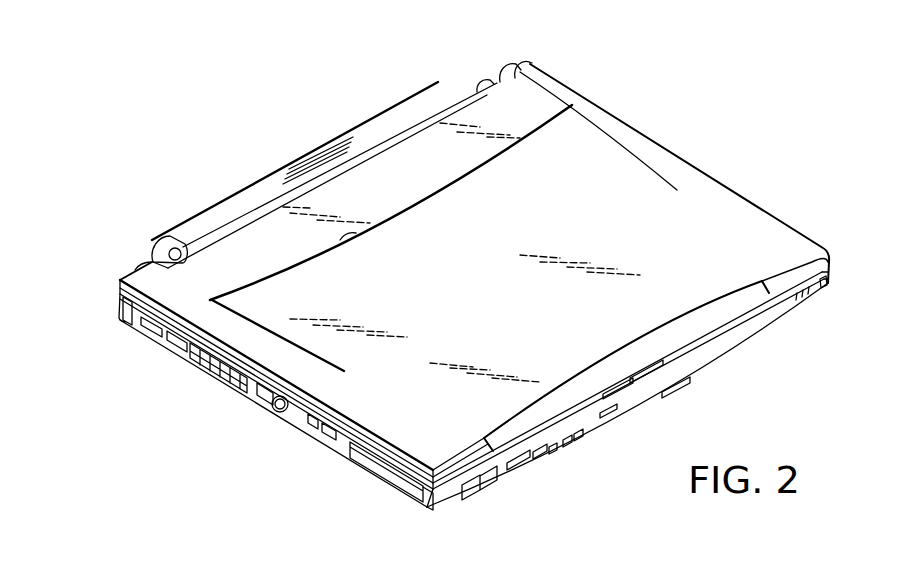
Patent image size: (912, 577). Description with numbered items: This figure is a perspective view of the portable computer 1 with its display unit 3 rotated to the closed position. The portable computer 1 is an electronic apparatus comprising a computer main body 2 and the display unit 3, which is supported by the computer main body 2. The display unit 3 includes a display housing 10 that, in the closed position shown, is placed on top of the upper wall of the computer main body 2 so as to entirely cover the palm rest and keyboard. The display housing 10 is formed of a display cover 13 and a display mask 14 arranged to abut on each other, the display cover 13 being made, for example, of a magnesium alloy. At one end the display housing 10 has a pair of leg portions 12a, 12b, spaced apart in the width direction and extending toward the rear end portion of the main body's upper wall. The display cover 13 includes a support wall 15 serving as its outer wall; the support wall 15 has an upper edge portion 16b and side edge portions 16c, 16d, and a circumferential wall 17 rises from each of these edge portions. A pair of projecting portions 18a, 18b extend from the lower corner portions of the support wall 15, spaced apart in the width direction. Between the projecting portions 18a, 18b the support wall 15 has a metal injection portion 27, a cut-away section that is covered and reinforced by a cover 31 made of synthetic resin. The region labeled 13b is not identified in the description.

The portable computer 1 is at (703, 76).
The computer main body 2 is at (347, 455).
The display unit 3 is at (794, 247).
The display housing 10 is at (173, 407).
The leg portion 12a is at (140, 266).
The leg portion 12b is at (513, 65).
The display cover 13 is at (233, 332).
The raised panel of display housing 13b is at (461, 168).
The display mask 14 is at (125, 322).
The support wall 15 is at (677, 223).
The upper edge portion 16b is at (822, 287).
The side edge portion 16c is at (266, 395).
The side edge portion 16d is at (683, 153).
The circumferential wall 17 is at (478, 458).
The projecting portion 18a is at (137, 268).
The projecting portion 18b is at (533, 65).
The metal injection portion 27 is at (351, 238).
The cover 31 is at (370, 162).